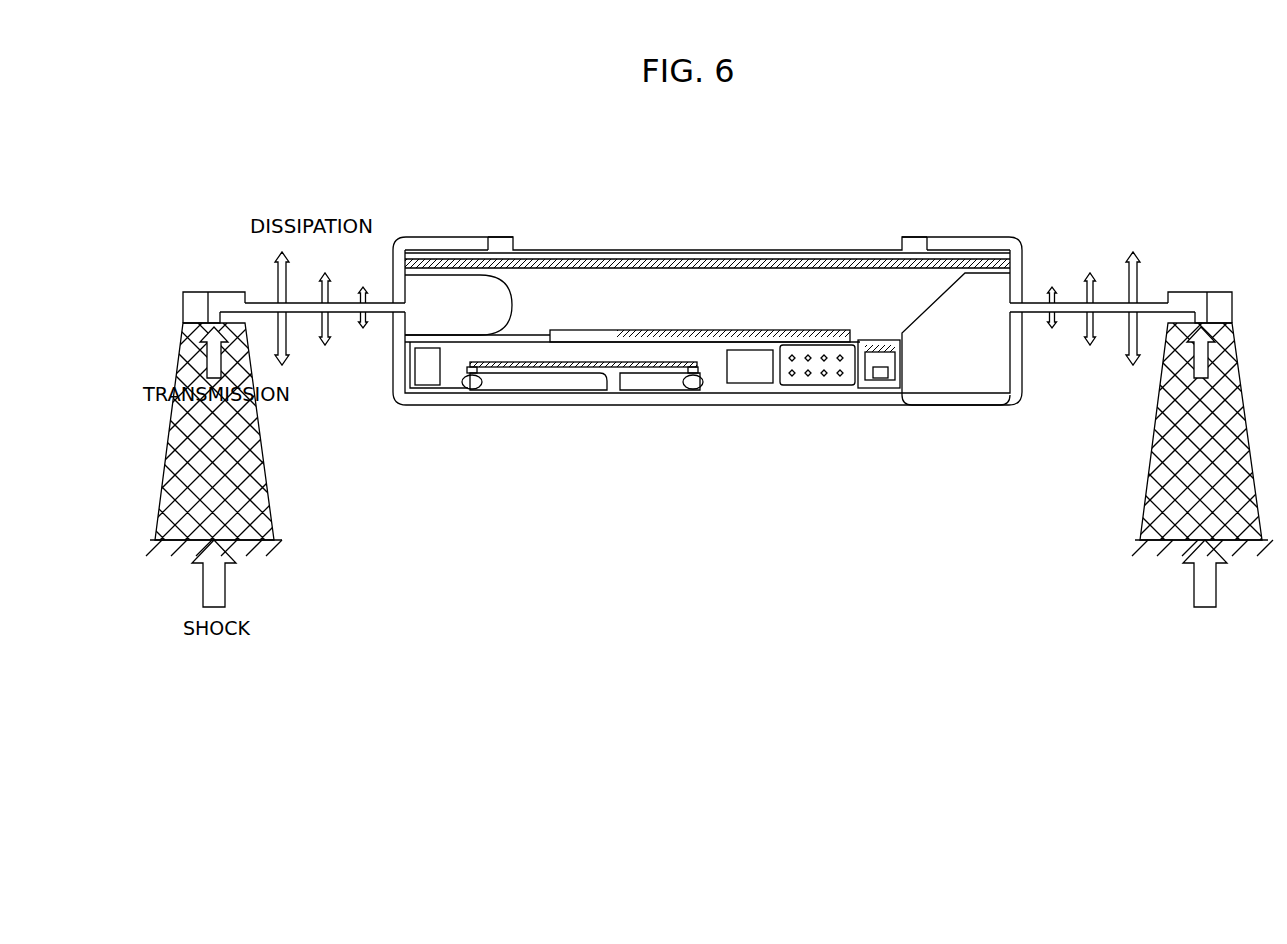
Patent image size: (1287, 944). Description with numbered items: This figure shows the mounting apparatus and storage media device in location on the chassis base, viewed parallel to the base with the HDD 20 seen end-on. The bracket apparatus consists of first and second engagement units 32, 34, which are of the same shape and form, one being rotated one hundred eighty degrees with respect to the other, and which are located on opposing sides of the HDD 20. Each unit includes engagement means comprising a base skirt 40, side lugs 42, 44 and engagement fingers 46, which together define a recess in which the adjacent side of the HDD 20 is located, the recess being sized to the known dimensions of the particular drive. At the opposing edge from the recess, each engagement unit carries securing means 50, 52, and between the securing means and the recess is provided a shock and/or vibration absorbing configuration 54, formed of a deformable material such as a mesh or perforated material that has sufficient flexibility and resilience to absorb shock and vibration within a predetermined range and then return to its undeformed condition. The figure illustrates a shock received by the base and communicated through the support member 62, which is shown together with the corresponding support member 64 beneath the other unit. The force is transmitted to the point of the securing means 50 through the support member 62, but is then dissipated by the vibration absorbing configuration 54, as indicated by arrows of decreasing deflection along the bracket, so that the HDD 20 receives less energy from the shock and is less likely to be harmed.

The HDD 20 is at (709, 258).
The first engagement unit 32 is at (302, 303).
The second engagement unit 34 is at (1070, 303).
The base skirt 40 is at (440, 406).
The side lug 42 is at (480, 313).
The side lug 44 is at (933, 367).
The engagement fingers 46 is at (473, 234).
The securing means 50 is at (215, 292).
The securing means 52 is at (1195, 294).
The shock and/or vibration absorbing configuration 54 is at (347, 303).
The support member 62 is at (176, 446).
The second mounting structure 64 is at (1163, 436).